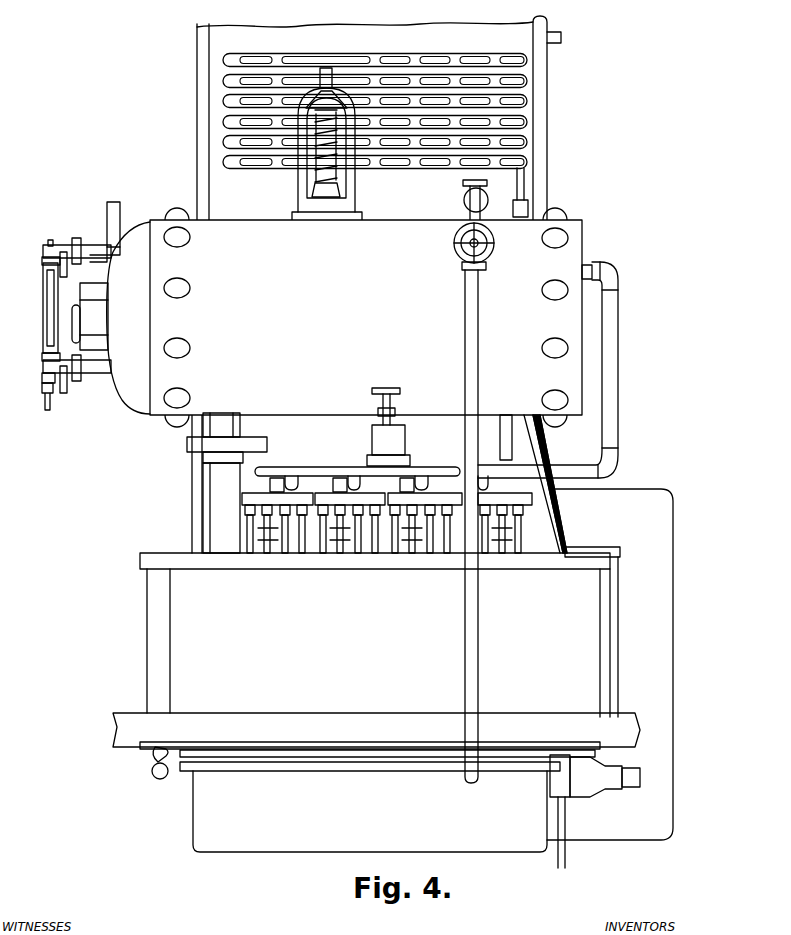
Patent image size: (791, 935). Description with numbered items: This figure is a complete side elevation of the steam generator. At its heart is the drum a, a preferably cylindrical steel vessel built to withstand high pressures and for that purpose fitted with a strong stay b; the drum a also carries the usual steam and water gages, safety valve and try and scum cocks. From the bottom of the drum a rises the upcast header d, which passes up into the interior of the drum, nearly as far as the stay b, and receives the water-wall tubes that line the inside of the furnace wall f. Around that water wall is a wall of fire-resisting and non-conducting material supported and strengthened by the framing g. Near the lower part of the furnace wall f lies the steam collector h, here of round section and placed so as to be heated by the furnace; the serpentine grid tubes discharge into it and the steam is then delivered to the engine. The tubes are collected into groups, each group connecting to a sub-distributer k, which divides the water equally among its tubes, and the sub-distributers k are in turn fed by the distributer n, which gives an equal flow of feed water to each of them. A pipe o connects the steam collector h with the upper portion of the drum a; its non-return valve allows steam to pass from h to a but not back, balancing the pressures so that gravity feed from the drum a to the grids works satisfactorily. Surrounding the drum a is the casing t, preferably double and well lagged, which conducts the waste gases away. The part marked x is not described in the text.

The drum a is at (344, 317).
The stay b is at (78, 320).
The upcast header d is at (222, 523).
The furnace wall f is at (376, 647).
The framing g is at (159, 765).
The steam collector h is at (557, 780).
The sub-distributer k is at (298, 495).
The distributer n is at (396, 442).
The pipe o is at (478, 388).
The casing t is at (537, 186).
The pressure gauge / spring indicator x is at (390, 150).